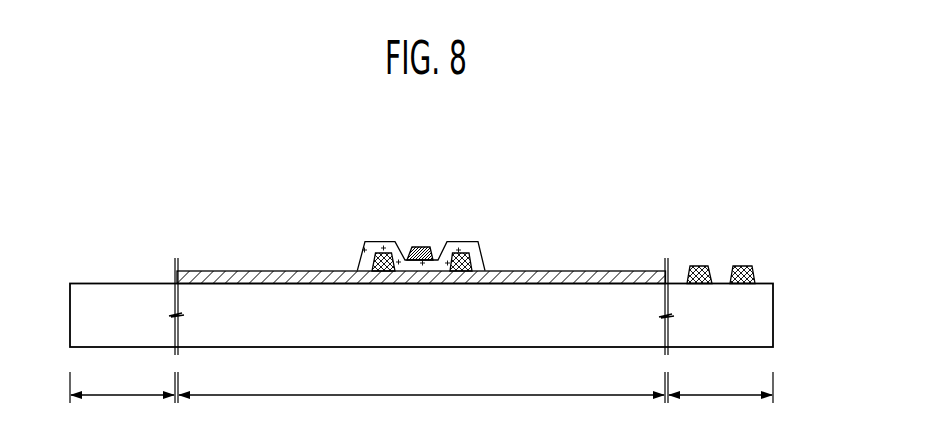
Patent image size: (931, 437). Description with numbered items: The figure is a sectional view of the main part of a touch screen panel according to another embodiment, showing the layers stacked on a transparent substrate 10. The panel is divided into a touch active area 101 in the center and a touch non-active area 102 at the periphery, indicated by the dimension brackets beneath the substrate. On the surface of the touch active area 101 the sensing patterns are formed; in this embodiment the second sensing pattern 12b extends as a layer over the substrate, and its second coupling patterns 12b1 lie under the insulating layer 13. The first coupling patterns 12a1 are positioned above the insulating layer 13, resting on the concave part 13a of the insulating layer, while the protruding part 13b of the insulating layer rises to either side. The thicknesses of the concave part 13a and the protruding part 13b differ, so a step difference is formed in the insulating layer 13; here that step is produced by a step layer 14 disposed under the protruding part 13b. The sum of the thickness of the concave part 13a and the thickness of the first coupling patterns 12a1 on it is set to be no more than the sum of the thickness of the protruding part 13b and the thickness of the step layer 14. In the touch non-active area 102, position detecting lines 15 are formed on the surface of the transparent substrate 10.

The transparent substrate 10 is at (770, 316).
The second sensing pattern 12b is at (253, 270).
The second coupling patterns 12b1 is at (418, 278).
The first coupling patterns 12a1 is at (423, 249).
The insulating layer 13 is at (406, 178).
The concave part 13a is at (407, 253).
The protruding part 13b is at (380, 247).
The step layer 14 is at (463, 257).
The position detecting lines 15 is at (755, 272).
The touch active area 101 is at (421, 410).
The touch non-active area 102 is at (421, 410).